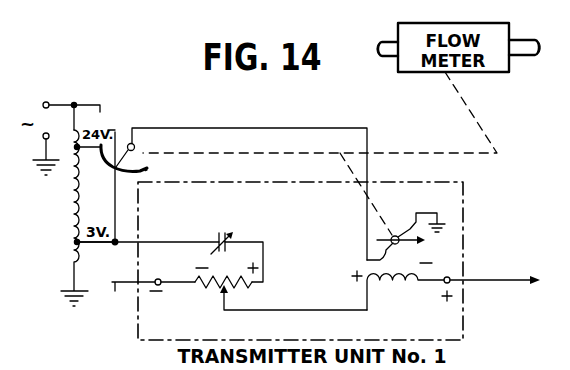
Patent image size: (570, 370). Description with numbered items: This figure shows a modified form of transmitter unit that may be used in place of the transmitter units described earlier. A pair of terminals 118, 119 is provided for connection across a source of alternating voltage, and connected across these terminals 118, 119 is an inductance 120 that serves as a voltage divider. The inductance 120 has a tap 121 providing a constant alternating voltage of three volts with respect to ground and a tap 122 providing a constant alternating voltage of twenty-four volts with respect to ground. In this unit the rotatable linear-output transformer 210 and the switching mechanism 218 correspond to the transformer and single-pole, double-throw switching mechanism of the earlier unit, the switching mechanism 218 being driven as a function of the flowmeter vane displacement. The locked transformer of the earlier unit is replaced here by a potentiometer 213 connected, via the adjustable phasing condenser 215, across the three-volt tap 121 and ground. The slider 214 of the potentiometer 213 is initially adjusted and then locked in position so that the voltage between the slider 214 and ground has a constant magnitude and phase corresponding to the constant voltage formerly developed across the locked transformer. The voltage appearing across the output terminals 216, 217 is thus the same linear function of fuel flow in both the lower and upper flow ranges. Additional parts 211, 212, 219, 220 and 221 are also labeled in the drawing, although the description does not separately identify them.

The terminal 118 is at (49, 103).
The terminal 119 is at (60, 141).
The inductance 120 is at (70, 196).
The tap 121 is at (81, 244).
The tap 122 is at (97, 148).
The rotatable linear-output transformer 210 is at (360, 252).
The relay contact 211 is at (400, 232).
The relay coil 212 is at (386, 283).
The potentiometer 213 is at (246, 287).
The slider 214 is at (224, 306).
The adjustable phasing condenser 215 is at (234, 238).
The output terminal 216 is at (161, 285).
The output terminal 217 is at (450, 283).
The switching mechanism 218 is at (120, 134).
The thermal element 219 is at (120, 140).
The contact 220 is at (147, 169).
The pivot 221 is at (135, 148).